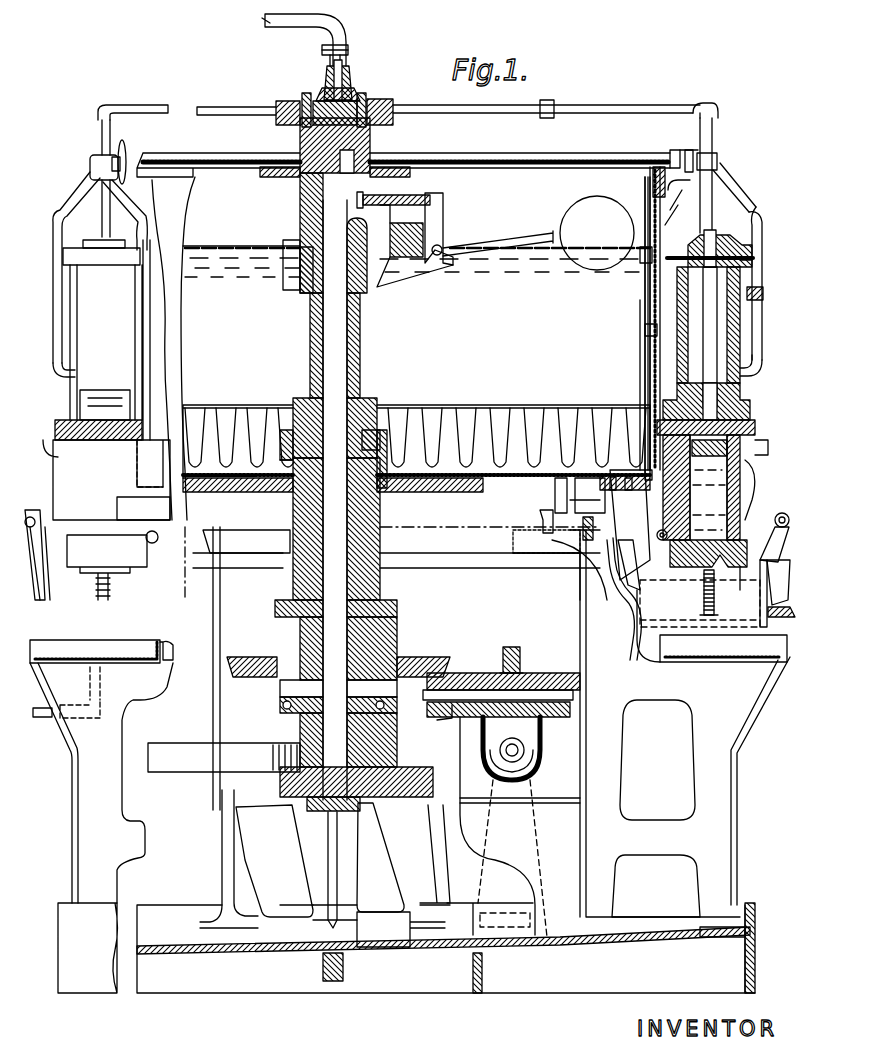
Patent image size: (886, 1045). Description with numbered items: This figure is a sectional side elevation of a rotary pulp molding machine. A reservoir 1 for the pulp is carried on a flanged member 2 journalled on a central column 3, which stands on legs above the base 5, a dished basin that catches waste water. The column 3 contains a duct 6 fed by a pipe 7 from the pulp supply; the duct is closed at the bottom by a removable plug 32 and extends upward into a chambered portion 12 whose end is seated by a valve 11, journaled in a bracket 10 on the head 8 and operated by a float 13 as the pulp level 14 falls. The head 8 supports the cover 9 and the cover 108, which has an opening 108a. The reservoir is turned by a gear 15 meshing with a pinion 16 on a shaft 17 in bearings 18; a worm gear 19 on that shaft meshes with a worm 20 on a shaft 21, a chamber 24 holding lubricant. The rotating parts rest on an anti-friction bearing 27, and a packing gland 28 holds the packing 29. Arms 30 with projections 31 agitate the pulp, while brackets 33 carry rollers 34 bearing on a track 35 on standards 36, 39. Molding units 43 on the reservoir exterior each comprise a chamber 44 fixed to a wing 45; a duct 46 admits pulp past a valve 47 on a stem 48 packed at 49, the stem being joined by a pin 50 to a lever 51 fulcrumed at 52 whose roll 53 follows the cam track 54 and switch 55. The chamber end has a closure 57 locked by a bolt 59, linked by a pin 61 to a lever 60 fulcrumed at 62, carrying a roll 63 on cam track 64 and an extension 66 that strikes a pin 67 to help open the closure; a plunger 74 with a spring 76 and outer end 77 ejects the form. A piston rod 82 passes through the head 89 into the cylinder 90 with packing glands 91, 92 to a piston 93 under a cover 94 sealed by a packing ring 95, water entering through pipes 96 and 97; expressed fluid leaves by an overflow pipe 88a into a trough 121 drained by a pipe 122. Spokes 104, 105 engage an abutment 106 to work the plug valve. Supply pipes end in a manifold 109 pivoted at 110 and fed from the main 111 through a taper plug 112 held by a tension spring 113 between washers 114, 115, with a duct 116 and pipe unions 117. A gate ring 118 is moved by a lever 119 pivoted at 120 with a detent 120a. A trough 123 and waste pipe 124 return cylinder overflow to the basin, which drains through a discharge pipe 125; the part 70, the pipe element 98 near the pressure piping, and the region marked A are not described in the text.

The reservoir 1 is at (220, 235).
The flanged member 2 is at (430, 501).
The column 3 is at (354, 388).
The base 5 is at (390, 950).
The duct 6 is at (340, 343).
The pipe 7 is at (200, 762).
The head 8 is at (335, 194).
The cover 9 is at (462, 167).
The bracket 10 is at (386, 243).
The valve 11 is at (367, 191).
The chambered portion 12 is at (300, 232).
The float 13 is at (595, 206).
The pulp 14 is at (223, 247).
The gear 15 is at (236, 669).
The pinion 16 is at (443, 722).
The shaft 17 is at (467, 673).
The bearings 18 is at (480, 678).
The worm gear 19 is at (523, 648).
The worm 20 is at (527, 752).
The shaft 21 is at (560, 733).
The chamber 24 is at (513, 768).
The anti-friction bearing 27 is at (276, 707).
The packing gland 28 is at (285, 503).
The packing 29 is at (366, 500).
The arms 30 is at (400, 408).
The projections 31 is at (438, 433).
The plug 32 is at (323, 811).
The brackets 33 is at (567, 489).
The rollers 34 is at (557, 528).
The track 35 is at (590, 532).
The standard 36 is at (737, 733).
The standard 39 is at (88, 770).
The units 43 is at (95, 362).
The chamber 44 is at (737, 479).
The wing 45 is at (648, 470).
The duct 46 is at (627, 478).
The valve 47 is at (709, 488).
The stem 48 is at (639, 529).
The packing 49 is at (660, 540).
The pin 50 is at (552, 555).
The lever 51 is at (588, 556).
The fulcrum 52 is at (610, 477).
The roll 53 is at (630, 635).
The cam track 54 is at (467, 568).
The switch 55 is at (620, 586).
The closure 57 is at (745, 570).
The bolt 59 is at (772, 567).
The lever 60 is at (773, 590).
The pin 61 is at (789, 522).
The fulcrum 62 is at (50, 497).
The roll 63 is at (774, 660).
The cam track 64 is at (787, 616).
The extension 66 is at (752, 502).
The pin 67 is at (709, 526).
The cylinder bottom 70 is at (725, 568).
The plunger 74 is at (706, 572).
The spring 76 is at (704, 597).
The outer end 77 is at (702, 612).
The piston rod 82 is at (706, 343).
The overflow pipe 88a is at (758, 442).
The head 89 is at (750, 421).
The cylinder 90 is at (725, 317).
The packing gland 91 is at (735, 398).
The packing gland 92 is at (742, 385).
The piston 93 is at (749, 257).
The cover 94 is at (670, 252).
The packing ring 95 is at (735, 256).
The pipe 96 is at (707, 208).
The pipe 97 is at (759, 236).
The pipe 98 is at (712, 158).
The spoke 104 is at (688, 149).
The extension 105 is at (693, 178).
The abutment 106 is at (672, 158).
The cover 108 is at (528, 163).
The opening 108a is at (647, 165).
The manifold 109 is at (384, 105).
The pivot 110 is at (300, 143).
The main 111 is at (272, 21).
The taper plug 112 is at (362, 94).
The tension spring 113 is at (327, 76).
The washer 114 is at (322, 93).
The washer 115 is at (330, 64).
The duct 116 is at (278, 108).
The pipe unions 117 is at (548, 101).
The ring 118 is at (647, 470).
The lever 119 is at (650, 297).
The pivot 120 is at (645, 330).
The detent 120a is at (650, 212).
The trough 121 is at (708, 653).
The pipe 122 is at (46, 718).
The trough 123 is at (213, 538).
The waste pipe 124 is at (217, 800).
The discharge pipe 125 is at (330, 986).
The post A is at (236, 857).